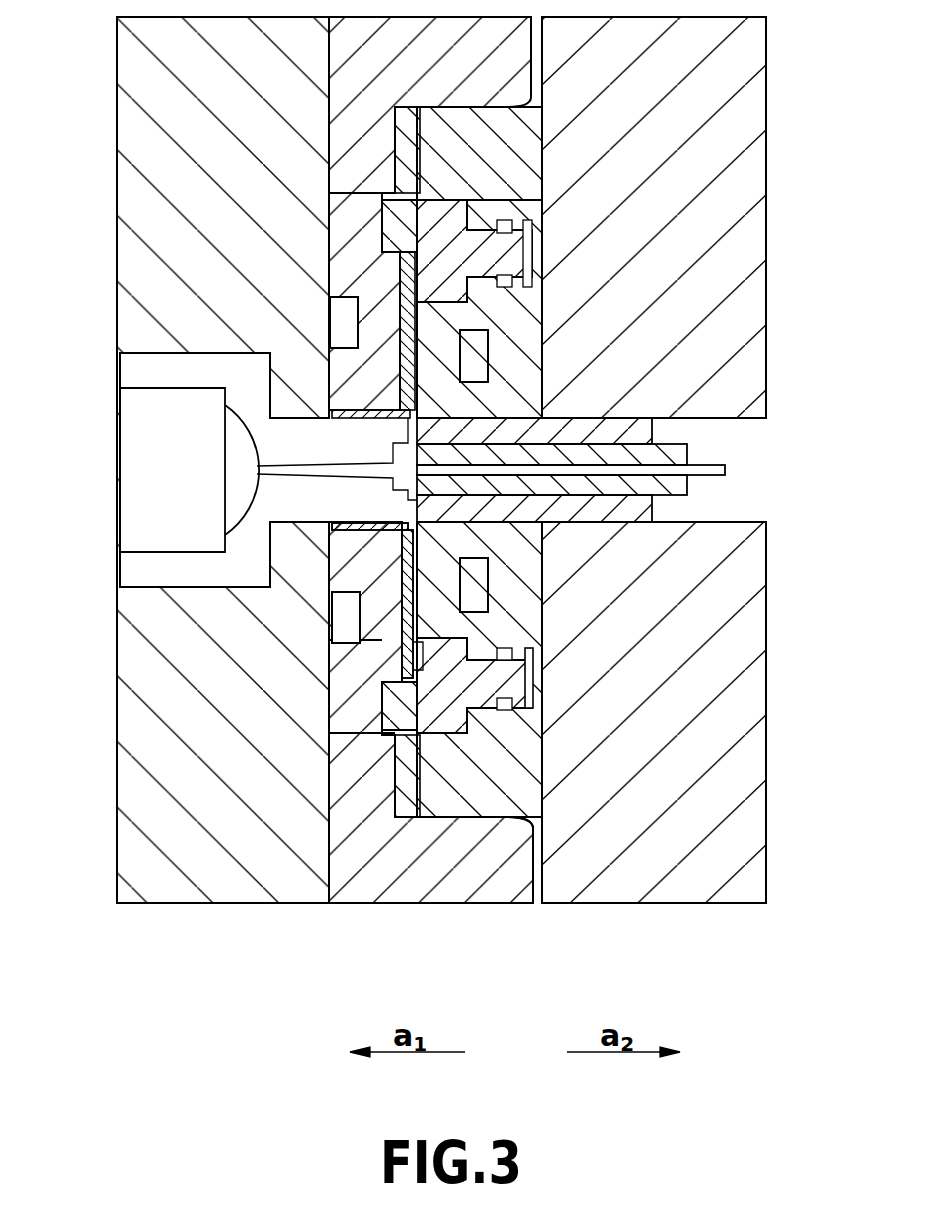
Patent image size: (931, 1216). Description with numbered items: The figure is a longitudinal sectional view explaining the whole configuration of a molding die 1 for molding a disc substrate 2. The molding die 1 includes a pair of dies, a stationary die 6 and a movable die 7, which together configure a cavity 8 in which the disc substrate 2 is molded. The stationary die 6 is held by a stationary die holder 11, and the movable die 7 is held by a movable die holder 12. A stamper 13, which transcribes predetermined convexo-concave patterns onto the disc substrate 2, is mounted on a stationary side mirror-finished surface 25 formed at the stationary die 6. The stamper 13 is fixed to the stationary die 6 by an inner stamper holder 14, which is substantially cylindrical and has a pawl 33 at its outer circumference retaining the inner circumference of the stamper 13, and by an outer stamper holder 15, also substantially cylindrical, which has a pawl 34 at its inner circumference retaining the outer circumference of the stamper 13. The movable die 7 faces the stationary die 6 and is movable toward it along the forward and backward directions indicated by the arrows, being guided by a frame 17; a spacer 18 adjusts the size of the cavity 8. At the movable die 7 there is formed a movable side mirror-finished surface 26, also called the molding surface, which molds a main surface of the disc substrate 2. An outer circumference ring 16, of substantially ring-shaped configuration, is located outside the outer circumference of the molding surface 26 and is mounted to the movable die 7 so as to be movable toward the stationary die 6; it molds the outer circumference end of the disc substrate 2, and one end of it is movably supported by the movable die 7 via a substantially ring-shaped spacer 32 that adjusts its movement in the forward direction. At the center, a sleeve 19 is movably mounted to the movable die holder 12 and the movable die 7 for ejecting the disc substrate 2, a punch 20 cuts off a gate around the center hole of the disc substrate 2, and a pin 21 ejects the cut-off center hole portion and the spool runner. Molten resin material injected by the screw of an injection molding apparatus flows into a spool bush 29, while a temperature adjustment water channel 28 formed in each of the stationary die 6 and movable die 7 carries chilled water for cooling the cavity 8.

The molding die 1 is at (125, 957).
The disc substrate 2 is at (420, 558).
The stationary die 6 is at (340, 695).
The movable die 7 is at (513, 602).
The cavity 8 is at (419, 598).
The stationary die holder 11 is at (145, 698).
The movable die holder 12 is at (735, 737).
The stamper 13 is at (403, 577).
The inner stamper holder 14 is at (365, 535).
The outer stamper holder 15 is at (383, 715).
The outer circumference ring 16 is at (450, 698).
The frame 17 is at (363, 860).
The spacer 18 is at (413, 800).
The sleeve 19 is at (640, 432).
The punch 20 is at (682, 455).
The pin 21 is at (717, 470).
The stationary side mirror-finished surface 25 is at (385, 378).
The movable side mirror-finished surface 26 is at (417, 327).
The temperature adjustment water channel 28 is at (345, 340).
The spool bush 29 is at (155, 386).
The spacer 32 is at (500, 712).
The pawl 33 is at (419, 527).
The pawl 34 is at (408, 672).